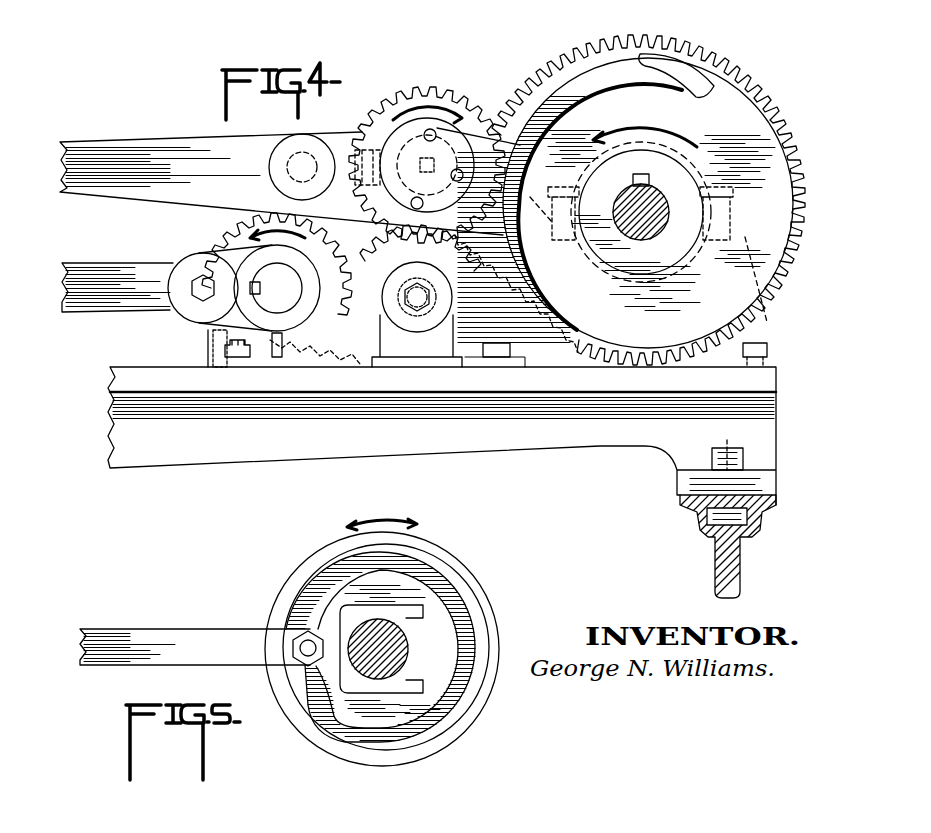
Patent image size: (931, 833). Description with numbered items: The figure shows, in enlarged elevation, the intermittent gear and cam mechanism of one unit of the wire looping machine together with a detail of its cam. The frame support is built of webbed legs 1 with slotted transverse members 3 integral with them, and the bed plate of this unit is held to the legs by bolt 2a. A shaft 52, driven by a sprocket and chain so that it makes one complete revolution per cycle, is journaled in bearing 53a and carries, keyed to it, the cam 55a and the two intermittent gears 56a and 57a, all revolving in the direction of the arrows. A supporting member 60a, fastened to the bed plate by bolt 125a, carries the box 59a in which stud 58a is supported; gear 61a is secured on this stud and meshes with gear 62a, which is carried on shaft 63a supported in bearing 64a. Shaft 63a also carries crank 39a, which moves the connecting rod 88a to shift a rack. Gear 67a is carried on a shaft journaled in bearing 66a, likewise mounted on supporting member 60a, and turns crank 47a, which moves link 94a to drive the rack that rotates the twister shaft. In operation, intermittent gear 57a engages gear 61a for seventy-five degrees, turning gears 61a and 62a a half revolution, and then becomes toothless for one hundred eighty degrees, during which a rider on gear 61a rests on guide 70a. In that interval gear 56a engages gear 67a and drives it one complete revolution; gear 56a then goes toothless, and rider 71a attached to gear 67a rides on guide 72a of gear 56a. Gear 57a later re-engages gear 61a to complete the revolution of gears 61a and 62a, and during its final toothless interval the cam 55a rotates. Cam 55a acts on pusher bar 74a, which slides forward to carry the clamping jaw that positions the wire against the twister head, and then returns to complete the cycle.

In FIG. 4, the webbed leg 1 is at (742, 568).
In FIG. 4, the bolt 2a is at (713, 457).
In FIG. 4, the slotted transverse member 3 is at (702, 522).
In FIG. 4, the crank 39a is at (195, 306).
In FIG. 4, the crank 47a is at (276, 161).
In FIG. 4, the shaft 52 is at (652, 198).
In FIG. 5, the shaft 52 is at (404, 638).
In FIG. 4, the bearing 53a is at (745, 237).
In FIG. 5, the cam 55a is at (462, 573).
In FIG. 4, the intermittent gear 56a is at (717, 102).
In FIG. 4, the intermittent gear 57a is at (580, 56).
In FIG. 4, the stud 58a is at (420, 300).
In FIG. 4, the box 59a is at (392, 318).
In FIG. 4, the supporting member 60a is at (766, 326).
In FIG. 4, the gear 61a is at (472, 346).
In FIG. 4, the gear 62a is at (362, 346).
In FIG. 4, the shaft 63a is at (275, 308).
In FIG. 4, the bearing 64a is at (245, 262).
In FIG. 4, the bearing 66a is at (374, 158).
In FIG. 4, the gear 67a is at (445, 81).
In FIG. 4, the guide 70a is at (680, 62).
In FIG. 4, the rider 71a is at (462, 137).
In FIG. 4, the guide 72a is at (524, 282).
In FIG. 5, the pusher bar 74a is at (183, 641).
In FIG. 4, the connecting rod 88a is at (97, 260).
In FIG. 4, the link 94a is at (138, 130).
In FIG. 4, the bolt 125a is at (225, 349).